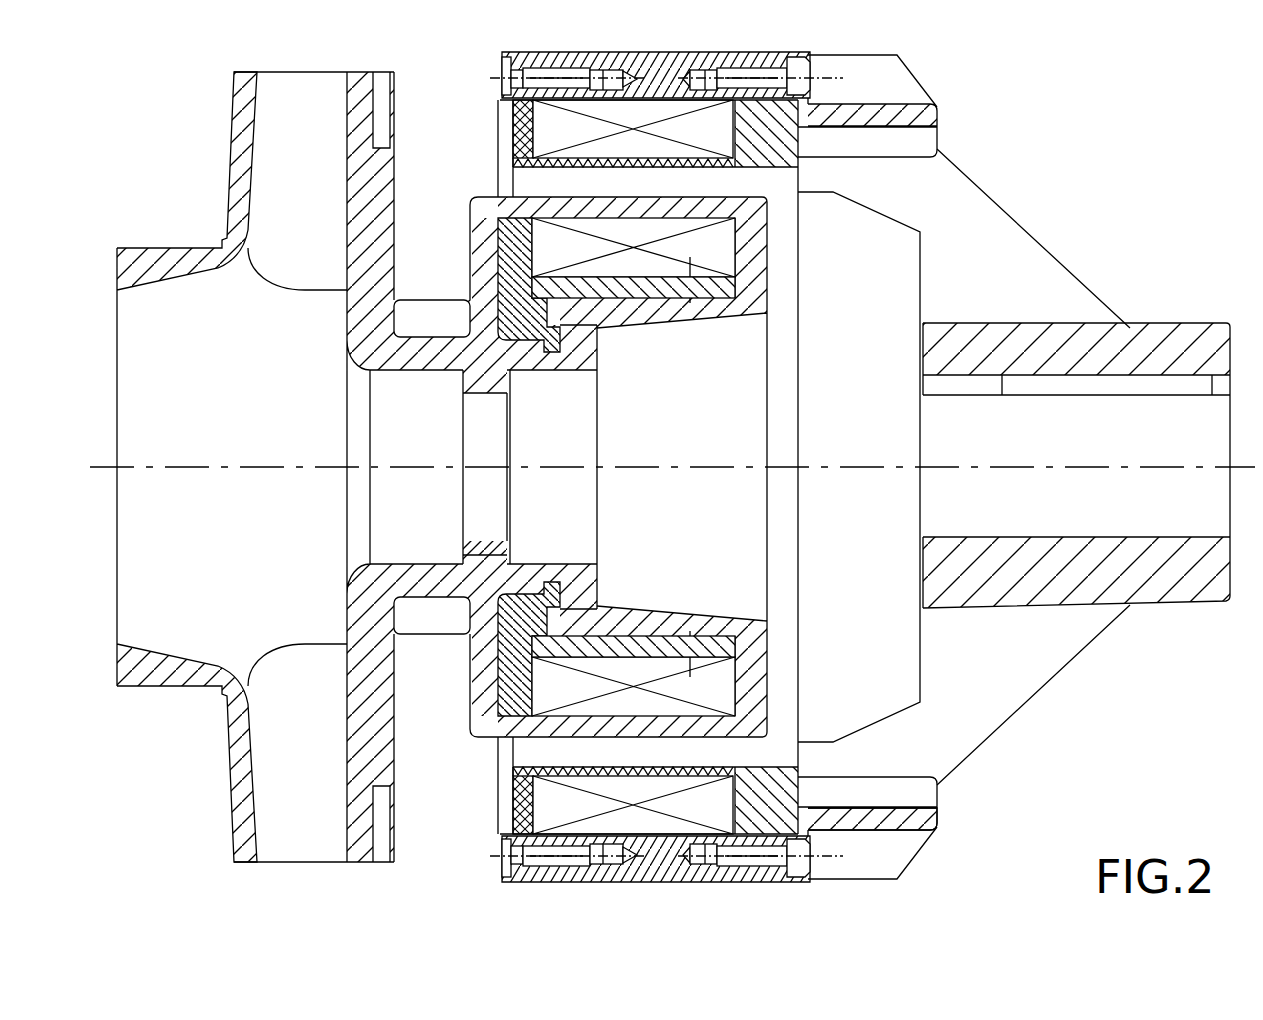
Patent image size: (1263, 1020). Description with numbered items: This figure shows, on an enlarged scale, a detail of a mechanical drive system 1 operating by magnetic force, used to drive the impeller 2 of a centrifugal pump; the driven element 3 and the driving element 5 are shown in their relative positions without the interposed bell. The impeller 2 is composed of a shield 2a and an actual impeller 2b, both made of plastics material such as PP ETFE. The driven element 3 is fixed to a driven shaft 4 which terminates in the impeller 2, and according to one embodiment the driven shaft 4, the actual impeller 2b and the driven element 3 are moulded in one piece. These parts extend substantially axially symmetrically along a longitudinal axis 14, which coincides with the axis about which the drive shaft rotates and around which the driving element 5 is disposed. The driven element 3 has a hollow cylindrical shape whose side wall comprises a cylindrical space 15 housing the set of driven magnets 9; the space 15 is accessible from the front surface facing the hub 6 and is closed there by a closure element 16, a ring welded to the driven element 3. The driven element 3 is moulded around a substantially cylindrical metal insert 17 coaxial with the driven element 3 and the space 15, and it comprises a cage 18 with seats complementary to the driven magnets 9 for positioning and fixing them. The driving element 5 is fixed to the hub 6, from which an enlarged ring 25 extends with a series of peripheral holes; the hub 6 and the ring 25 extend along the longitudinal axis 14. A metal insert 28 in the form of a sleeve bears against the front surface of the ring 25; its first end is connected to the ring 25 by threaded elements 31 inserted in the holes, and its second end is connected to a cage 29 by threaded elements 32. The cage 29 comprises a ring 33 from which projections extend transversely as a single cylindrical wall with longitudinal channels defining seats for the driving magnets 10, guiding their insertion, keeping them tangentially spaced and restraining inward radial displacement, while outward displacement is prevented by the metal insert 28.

The drive system 1 is at (995, 107).
The impeller 2 is at (293, 440).
The shield 2a is at (240, 152).
The actual impeller 2b is at (388, 185).
The driven element 3 is at (466, 724).
The driven shaft 4 is at (433, 598).
The driving element 5 is at (650, 46).
The hub 6 is at (1165, 345).
The driven magnets 9 is at (603, 228).
The driving magnets 10 is at (640, 115).
The longitudinal axis 14 is at (103, 478).
The space 15 is at (742, 228).
The closure element 16 is at (765, 230).
The metal insert 17 is at (498, 215).
The cage 18 is at (503, 732).
The ring 25 is at (828, 832).
The metal insert 28 is at (655, 866).
The cage 29 is at (492, 855).
The threaded elements 31 is at (767, 78).
The threaded elements 32 is at (522, 78).
The ring 33 is at (506, 102).